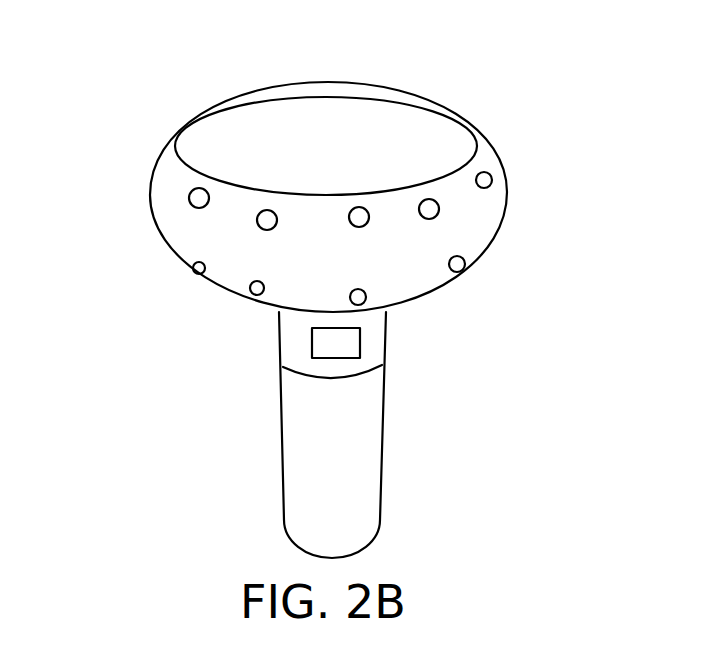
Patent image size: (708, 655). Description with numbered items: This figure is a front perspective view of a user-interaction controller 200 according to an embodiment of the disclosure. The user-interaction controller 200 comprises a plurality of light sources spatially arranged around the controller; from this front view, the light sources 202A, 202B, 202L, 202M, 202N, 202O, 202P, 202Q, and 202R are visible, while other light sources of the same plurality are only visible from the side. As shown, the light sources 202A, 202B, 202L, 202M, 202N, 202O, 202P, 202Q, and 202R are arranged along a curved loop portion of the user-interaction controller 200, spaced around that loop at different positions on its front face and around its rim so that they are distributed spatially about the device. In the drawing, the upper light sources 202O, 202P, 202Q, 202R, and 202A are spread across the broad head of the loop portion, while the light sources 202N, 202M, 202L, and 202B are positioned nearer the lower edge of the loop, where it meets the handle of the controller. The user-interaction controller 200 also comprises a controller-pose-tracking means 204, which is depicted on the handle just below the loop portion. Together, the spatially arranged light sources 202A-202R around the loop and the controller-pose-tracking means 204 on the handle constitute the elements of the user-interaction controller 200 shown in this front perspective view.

The user-interaction controller 200 is at (295, 412).
The controller-pose-tracking means 204 is at (355, 343).
The light source 202A is at (484, 180).
The light source 202B is at (457, 264).
The light source 202L is at (358, 297).
The light source 202M is at (257, 288).
The light source 202N is at (199, 268).
The light source 202O is at (199, 198).
The light source 202P is at (267, 220).
The light source 202Q is at (359, 217).
The light source 202R is at (429, 209).